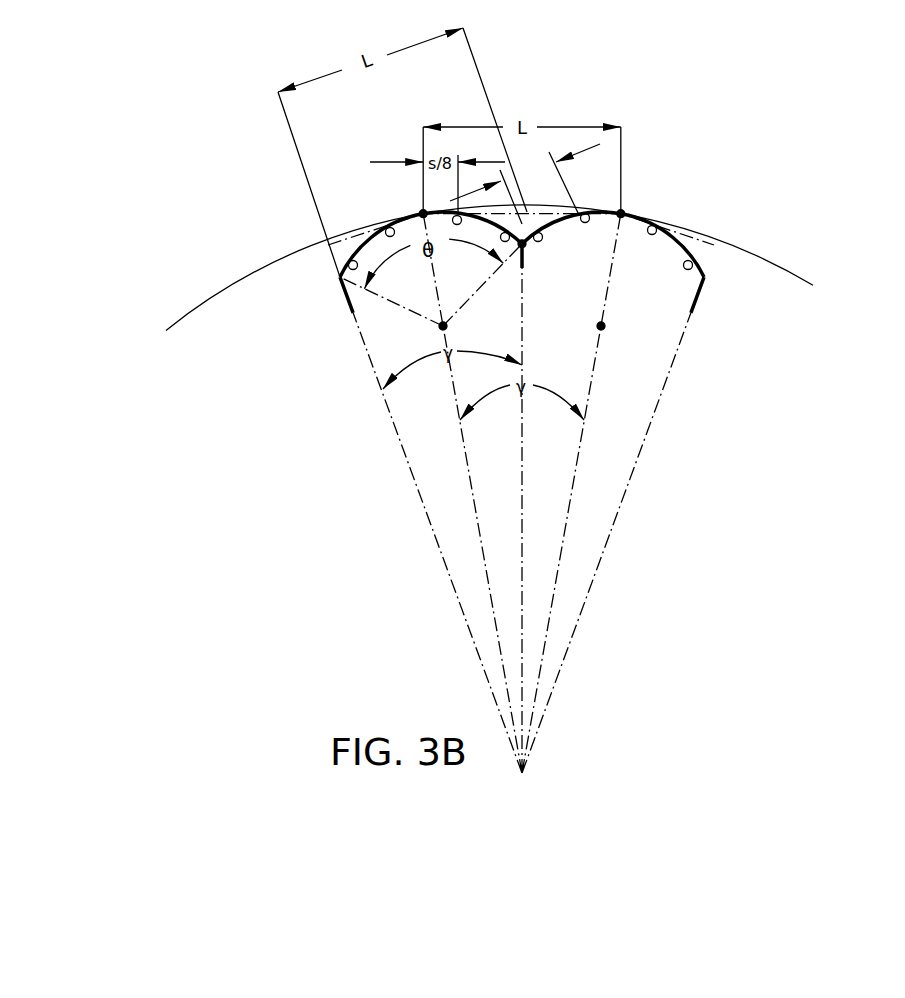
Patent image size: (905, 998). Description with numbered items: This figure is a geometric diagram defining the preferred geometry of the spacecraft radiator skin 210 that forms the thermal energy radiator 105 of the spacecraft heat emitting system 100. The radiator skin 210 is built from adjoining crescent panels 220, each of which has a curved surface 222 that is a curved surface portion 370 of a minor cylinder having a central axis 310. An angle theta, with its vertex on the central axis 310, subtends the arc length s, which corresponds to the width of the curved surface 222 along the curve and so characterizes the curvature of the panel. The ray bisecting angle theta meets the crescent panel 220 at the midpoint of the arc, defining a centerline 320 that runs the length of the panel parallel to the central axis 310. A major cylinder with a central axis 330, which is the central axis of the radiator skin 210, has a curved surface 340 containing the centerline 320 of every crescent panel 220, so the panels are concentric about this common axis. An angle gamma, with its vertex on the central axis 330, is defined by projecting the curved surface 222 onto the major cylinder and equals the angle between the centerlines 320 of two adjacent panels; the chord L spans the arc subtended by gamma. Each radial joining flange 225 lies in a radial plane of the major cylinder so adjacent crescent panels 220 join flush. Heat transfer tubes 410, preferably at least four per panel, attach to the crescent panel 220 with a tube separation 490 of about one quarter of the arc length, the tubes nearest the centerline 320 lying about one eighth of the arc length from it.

The spacecraft heat emitting system 100 is at (235, 82).
The thermal energy radiator 105 is at (197, 142).
The spacecraft radiator skin 210 is at (663, 145).
The crescent panel 220 is at (676, 240).
The curved surface 222 is at (712, 258).
The radial joining flange 225 is at (523, 265).
The central axis 310 is at (601, 327).
The centerline 320 is at (421, 212).
The central axis 330 is at (522, 773).
The curved surface 340 is at (246, 279).
The curved surface portion 370 is at (349, 266).
The heat transfer tube 410 is at (690, 270).
The tube separation 490 is at (525, 184).